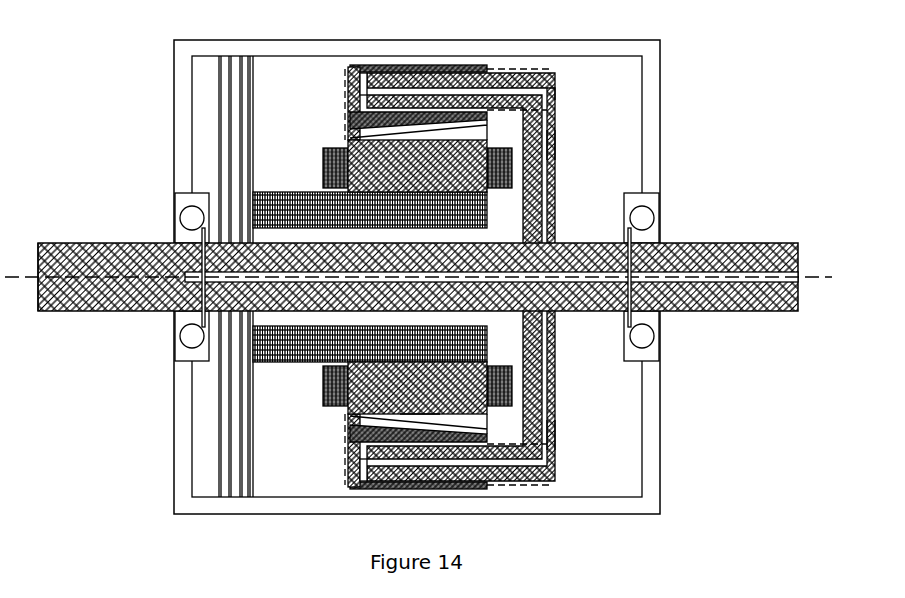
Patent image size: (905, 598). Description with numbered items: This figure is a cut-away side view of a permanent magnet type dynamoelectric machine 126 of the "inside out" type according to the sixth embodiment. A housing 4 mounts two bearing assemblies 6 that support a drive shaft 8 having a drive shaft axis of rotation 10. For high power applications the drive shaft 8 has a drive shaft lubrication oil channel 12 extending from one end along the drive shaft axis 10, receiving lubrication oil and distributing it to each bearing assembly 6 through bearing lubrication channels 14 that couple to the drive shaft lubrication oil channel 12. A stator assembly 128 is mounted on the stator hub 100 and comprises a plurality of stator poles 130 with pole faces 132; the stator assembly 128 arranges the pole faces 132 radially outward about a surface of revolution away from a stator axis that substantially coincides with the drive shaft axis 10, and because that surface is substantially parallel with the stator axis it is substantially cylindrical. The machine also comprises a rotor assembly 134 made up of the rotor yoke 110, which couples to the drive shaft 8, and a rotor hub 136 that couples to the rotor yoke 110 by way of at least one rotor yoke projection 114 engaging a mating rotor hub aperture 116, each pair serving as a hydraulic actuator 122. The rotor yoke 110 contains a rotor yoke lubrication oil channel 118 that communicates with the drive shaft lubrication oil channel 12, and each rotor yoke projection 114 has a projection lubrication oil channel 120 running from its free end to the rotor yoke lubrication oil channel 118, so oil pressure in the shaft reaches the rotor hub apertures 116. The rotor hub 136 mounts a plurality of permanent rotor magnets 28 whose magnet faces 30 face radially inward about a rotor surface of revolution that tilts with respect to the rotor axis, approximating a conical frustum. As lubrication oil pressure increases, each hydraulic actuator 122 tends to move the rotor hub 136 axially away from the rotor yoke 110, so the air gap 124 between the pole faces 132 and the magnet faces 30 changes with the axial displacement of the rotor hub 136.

The housing 4 is at (604, 56).
The bearing assembly 6 is at (180, 194).
The drive shaft 8 is at (728, 242).
The drive shaft axis of rotation 10 is at (20, 278).
The drive shaft lubrication oil channel 12 is at (798, 277).
The bearing lubrication channels 14 is at (205, 233).
The permanent rotor magnets 28 is at (362, 128).
The magnet faces 30 is at (428, 124).
The stator hub 100 is at (256, 445).
The rotor yoke 110 is at (551, 90).
The rotor yoke projection 114 is at (347, 476).
The rotor hub aperture 116 is at (405, 405).
The rotor yoke lubrication oil channel 118 is at (551, 140).
The projection lubrication oil channel 120 is at (502, 82).
The hydraulic actuator 122 is at (422, 65).
The air gap 124 is at (385, 138).
The dynamoelectric machine 126 is at (105, 108).
The stator assembly 128 is at (346, 137).
The stator poles 130 is at (347, 190).
The pole faces 132 is at (348, 82).
The rotor assembly 134 is at (558, 434).
The rotor hub 136 is at (363, 63).